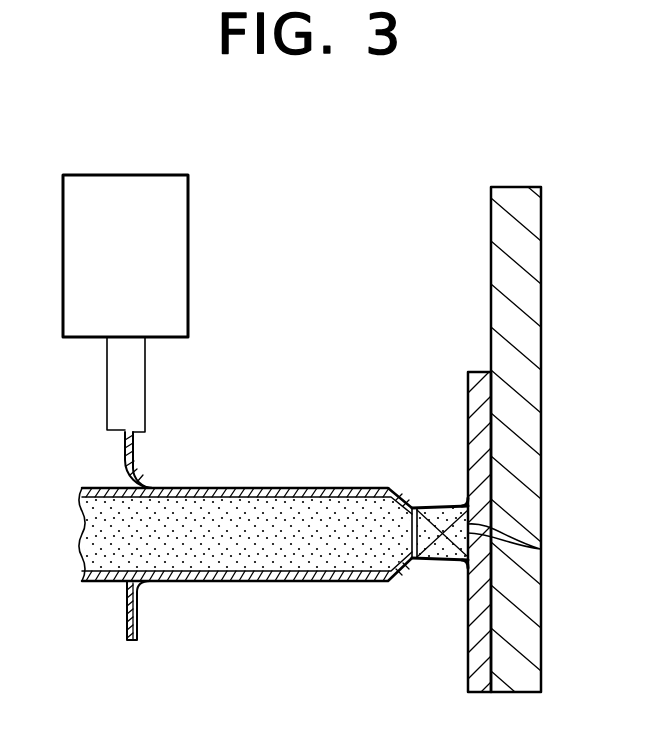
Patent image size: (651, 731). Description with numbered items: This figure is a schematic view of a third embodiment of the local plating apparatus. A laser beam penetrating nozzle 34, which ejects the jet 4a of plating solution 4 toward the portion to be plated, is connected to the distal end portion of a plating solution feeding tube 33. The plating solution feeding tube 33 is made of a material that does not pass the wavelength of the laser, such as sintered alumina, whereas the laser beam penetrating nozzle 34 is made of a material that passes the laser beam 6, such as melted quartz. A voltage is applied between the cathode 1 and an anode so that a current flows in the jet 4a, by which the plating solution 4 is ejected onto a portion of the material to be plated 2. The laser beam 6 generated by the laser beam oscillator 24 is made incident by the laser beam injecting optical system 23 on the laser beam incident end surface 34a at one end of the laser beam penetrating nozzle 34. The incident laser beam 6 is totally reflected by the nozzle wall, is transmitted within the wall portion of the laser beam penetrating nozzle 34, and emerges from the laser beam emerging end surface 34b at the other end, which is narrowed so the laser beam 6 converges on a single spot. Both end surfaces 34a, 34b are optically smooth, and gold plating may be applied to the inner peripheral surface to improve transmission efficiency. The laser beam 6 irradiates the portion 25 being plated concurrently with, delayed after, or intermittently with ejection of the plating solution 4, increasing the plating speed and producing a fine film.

The cathode 1 is at (530, 225).
The material to be plated 2 is at (478, 378).
The plating solution 4 is at (275, 552).
The jet 4a is at (426, 538).
The laser beam 6 is at (452, 505).
The laser beam injecting optical system 23 is at (117, 375).
The laser beam oscillator 24 is at (190, 248).
The portion being plated 25 is at (540, 549).
The plating solution feeding tube 33 is at (85, 585).
The laser beam penetrating nozzle 34 is at (275, 488).
The laser beam incident end surface 34a is at (128, 424).
The laser beam emerging end surface 34b is at (417, 505).